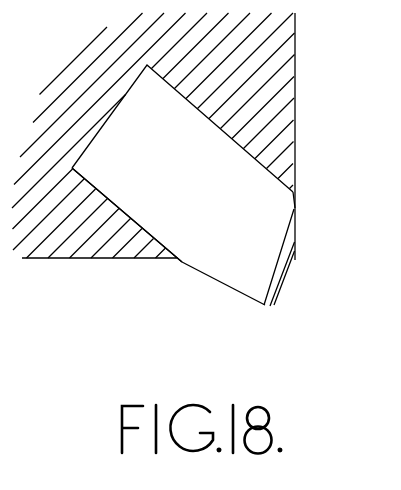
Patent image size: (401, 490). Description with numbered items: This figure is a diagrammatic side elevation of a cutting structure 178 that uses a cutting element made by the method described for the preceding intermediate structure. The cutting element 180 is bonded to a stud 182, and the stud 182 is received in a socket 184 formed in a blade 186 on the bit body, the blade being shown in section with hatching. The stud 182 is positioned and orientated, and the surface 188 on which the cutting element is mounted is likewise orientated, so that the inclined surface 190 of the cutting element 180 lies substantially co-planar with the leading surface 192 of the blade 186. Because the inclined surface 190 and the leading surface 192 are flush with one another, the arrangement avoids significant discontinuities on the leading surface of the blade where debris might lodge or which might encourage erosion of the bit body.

The cutting structure 178 is at (297, 190).
The cutting element 180 is at (278, 251).
The stud 182 is at (175, 218).
The socket 184 is at (112, 205).
The blade 186 is at (263, 55).
The surface 188 is at (258, 276).
The inclined surface 190 is at (295, 227).
The leading surface 192 is at (295, 118).